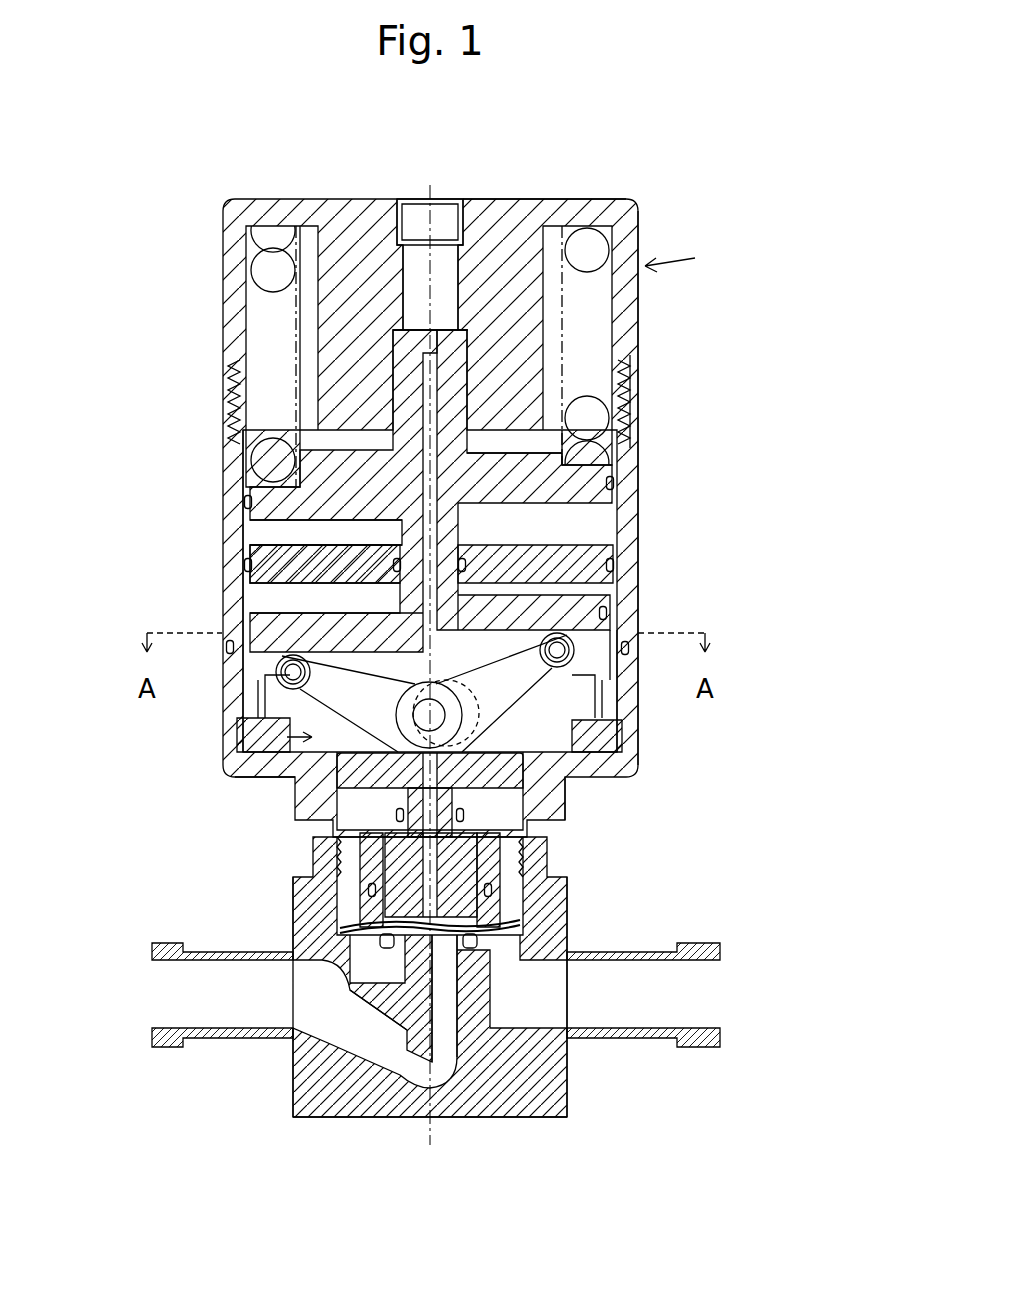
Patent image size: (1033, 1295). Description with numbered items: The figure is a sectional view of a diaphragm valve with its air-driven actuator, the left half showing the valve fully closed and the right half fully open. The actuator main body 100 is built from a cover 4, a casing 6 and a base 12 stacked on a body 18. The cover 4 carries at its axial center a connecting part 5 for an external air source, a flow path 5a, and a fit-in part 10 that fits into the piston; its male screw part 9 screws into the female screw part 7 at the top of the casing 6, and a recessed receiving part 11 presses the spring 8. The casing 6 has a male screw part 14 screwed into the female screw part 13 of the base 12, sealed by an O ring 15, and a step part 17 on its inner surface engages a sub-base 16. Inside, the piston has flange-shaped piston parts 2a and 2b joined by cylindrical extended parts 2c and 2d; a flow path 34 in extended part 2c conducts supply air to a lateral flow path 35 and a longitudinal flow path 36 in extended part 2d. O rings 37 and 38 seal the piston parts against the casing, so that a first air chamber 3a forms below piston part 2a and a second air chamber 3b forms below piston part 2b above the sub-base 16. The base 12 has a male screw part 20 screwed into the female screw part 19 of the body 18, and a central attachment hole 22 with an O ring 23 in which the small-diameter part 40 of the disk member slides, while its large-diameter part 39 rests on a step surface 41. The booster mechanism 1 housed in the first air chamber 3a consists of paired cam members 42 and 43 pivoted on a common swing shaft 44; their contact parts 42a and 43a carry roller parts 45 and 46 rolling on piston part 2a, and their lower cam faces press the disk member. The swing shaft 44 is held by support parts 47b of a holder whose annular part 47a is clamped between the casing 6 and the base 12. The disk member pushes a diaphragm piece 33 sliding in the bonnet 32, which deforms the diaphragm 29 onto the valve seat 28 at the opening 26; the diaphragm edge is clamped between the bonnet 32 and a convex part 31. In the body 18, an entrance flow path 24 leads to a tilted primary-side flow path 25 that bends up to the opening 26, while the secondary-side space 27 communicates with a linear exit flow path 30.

The booster mechanism 1 is at (235, 770).
The actuator main body 100 is at (690, 488).
The piston part 2a is at (300, 622).
The piston part 2b is at (472, 455).
The extended part 2c is at (452, 397).
The extended part 2d is at (456, 515).
The first air chamber 3a is at (614, 575).
The second air chamber 3b is at (614, 500).
The cover 4 is at (598, 207).
The connecting part 5 is at (410, 199).
The flow path 5a is at (452, 199).
The casing 6 is at (241, 442).
The female screw part 7 is at (252, 392).
The spring 8 is at (593, 250).
The male screw part 9 is at (614, 398).
The fit-in part 10 is at (398, 335).
The receiving part 11 is at (292, 248).
The base 12 is at (567, 790).
The female screw part 13 is at (262, 702).
The male screw part 14 is at (602, 702).
The O ring 15 is at (626, 652).
The sub-base 16 is at (590, 562).
The step part 17 is at (290, 578).
The body 18 is at (530, 1100).
The female screw part 19 is at (306, 880).
The male screw part 20 is at (470, 860).
The attachment hole 22 is at (452, 800).
The O ring 23 is at (366, 858).
The entrance flow path 24 is at (330, 1000).
The primary-side flow path 25 is at (352, 1095).
The opening 26 is at (447, 1105).
The secondary-side space 27 is at (160, 962).
The valve seat 28 is at (472, 942).
The diaphragm 29 is at (386, 940).
The exit flow path 30 is at (540, 995).
The convex part 31 is at (300, 945).
The bonnet 32 is at (482, 922).
The diaphragm piece 33 is at (512, 882).
The flow path 34 is at (626, 412).
The flow path 35 is at (400, 521).
The flow path 36 is at (400, 547).
The O ring 37 is at (608, 612).
The O ring 38 is at (252, 498).
The large-diameter part 39 is at (305, 760).
The small-diameter part 40 is at (396, 815).
The step surface 41 is at (342, 770).
The cam member 42 is at (596, 737).
The contact part 42a is at (560, 645).
The cam member 43 is at (262, 736).
The contact part 43a is at (276, 660).
The swing shaft 44 is at (560, 746).
The roller part 45 is at (620, 660).
The roller part 46 is at (230, 650).
The annular part 47a is at (470, 698).
The support part 47b is at (520, 790).